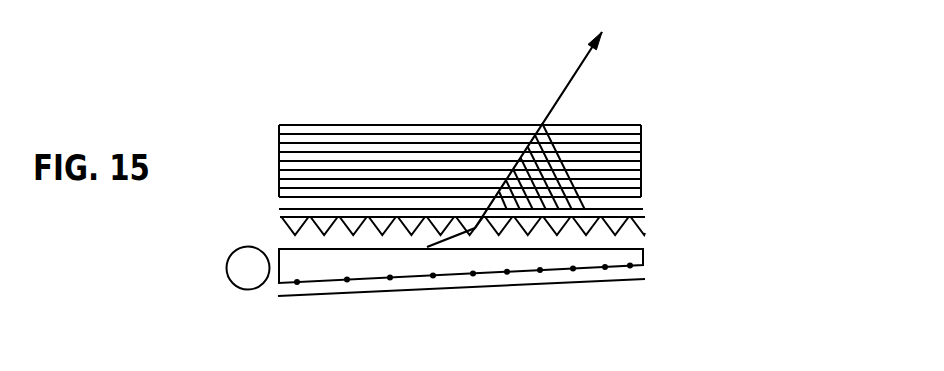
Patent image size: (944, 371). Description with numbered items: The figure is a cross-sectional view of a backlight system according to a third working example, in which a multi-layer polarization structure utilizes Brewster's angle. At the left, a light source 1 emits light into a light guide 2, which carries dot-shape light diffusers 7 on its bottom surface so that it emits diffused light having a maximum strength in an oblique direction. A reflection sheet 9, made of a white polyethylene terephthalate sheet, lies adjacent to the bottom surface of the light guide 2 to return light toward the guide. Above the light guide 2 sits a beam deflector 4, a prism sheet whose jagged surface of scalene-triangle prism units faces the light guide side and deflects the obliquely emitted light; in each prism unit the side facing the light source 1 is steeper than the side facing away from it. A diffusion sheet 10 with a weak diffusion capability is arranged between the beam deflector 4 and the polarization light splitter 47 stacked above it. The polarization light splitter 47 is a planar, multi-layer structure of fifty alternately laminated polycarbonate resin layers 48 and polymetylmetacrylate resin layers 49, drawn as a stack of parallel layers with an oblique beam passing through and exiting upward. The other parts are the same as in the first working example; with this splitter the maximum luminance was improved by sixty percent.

The light source 1 is at (240, 275).
The light guide 2 is at (645, 262).
The beam deflector 4 is at (634, 228).
The dot-shape light diffusers 7 is at (347, 285).
The reflection sheet 9 is at (430, 289).
The diffusion sheet 10 is at (647, 213).
The polarization light splitter 47 is at (593, 150).
The polycarbonate resin layers 48 is at (641, 142).
The polymetylmetacrylate resin layers 49 is at (641, 132).